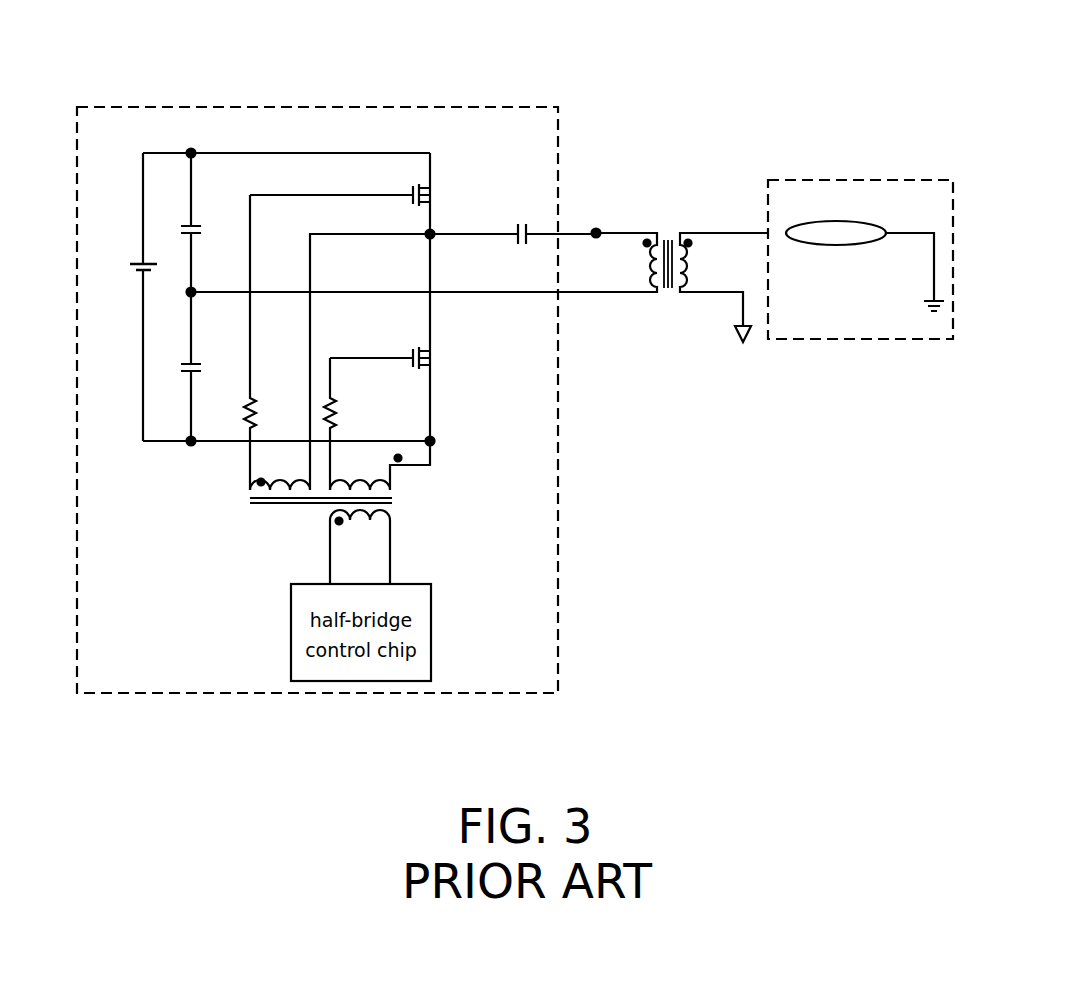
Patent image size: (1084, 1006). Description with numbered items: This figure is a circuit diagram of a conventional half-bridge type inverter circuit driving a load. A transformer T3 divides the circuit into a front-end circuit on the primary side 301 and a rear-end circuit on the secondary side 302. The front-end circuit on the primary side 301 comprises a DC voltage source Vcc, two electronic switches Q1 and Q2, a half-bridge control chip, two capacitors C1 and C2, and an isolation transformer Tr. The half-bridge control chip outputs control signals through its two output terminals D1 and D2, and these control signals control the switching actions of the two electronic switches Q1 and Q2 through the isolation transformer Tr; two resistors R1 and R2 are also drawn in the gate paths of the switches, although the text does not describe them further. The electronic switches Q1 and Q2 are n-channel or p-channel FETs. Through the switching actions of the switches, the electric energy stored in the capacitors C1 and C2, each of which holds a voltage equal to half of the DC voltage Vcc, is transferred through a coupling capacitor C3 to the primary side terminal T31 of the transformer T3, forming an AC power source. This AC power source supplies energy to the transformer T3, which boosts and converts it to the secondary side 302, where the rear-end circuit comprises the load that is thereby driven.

The primary side 301 is at (488, 107).
The secondary side 302 is at (860, 221).
The primary side terminal T31 is at (596, 233).
The DC voltage source Vcc is at (122, 266).
The capacitor C1 is at (181, 222).
The capacitor C2 is at (181, 366).
The coupling capacitor C3 is at (513, 222).
The electronic switch Q1 is at (357, 297).
The electronic switch Q2 is at (397, 359).
The gate resistor R1 is at (266, 342).
The gate resistor R2 is at (346, 424).
The isolation transformer Tr is at (340, 409).
The transformer T3 is at (682, 272).
The output terminal D1 is at (314, 571).
The output terminal D2 is at (406, 571).
The element load is at (836, 219).